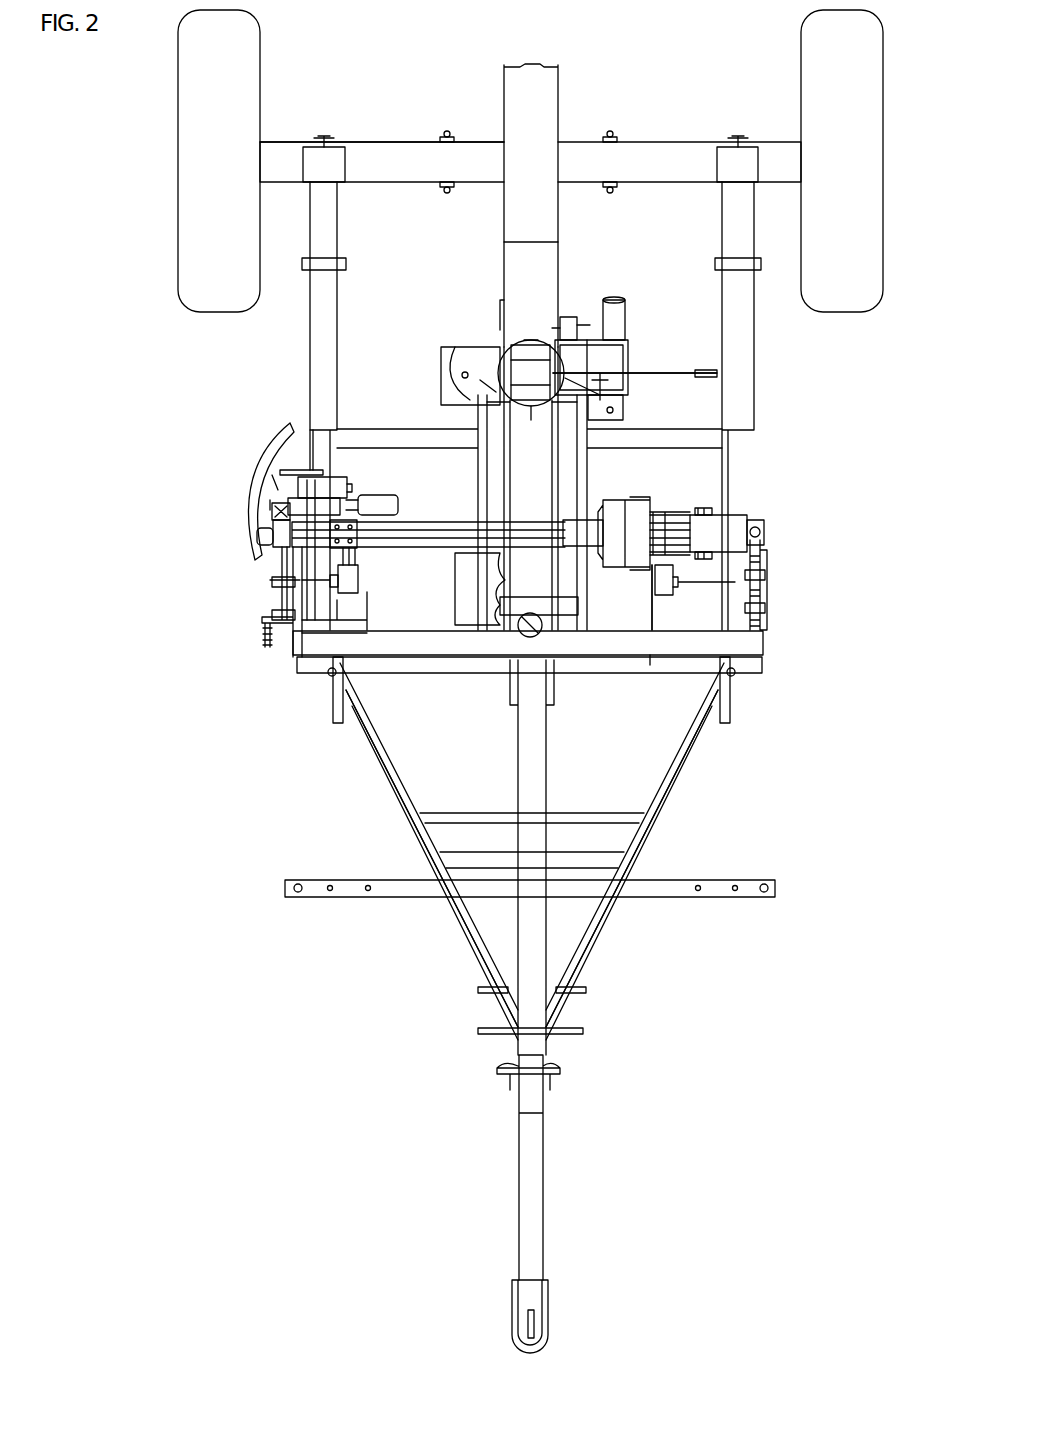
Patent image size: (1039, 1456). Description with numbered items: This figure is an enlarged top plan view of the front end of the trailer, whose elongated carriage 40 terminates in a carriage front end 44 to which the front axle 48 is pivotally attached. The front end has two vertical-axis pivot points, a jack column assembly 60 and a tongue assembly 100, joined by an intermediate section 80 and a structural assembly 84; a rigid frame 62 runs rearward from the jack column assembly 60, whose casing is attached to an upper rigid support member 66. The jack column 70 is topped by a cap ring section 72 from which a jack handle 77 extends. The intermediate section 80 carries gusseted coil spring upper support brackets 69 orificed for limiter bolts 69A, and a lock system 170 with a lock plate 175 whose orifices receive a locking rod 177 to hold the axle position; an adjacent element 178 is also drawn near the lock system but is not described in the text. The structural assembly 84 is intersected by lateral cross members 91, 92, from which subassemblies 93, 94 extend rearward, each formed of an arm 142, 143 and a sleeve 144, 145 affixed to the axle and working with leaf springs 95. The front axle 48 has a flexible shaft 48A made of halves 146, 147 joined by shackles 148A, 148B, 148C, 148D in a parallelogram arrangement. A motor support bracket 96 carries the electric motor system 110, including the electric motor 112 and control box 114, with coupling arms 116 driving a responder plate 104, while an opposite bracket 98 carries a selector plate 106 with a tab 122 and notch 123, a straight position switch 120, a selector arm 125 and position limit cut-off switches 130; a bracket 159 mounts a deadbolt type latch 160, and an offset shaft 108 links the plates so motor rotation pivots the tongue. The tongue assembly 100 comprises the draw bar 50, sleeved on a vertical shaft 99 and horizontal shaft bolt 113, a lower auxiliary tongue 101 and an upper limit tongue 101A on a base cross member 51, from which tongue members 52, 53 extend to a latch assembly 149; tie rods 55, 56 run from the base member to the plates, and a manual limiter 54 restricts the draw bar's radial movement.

The elongated carriage 40 is at (155, 272).
The carriage front end 44 is at (764, 315).
The front axle 48 is at (530, 95).
The flexible shaft 48A is at (645, 140).
The draw bar 50 is at (544, 1006).
The base cross member 51 is at (560, 660).
The tongue member 52 is at (372, 745).
The tongue member 53 is at (712, 700).
The manual limiter 54 is at (350, 930).
The tie rod 55 is at (765, 590).
The tie rod 56 is at (270, 600).
The jack column assembly 60 is at (512, 178).
The rigid frame 62 is at (500, 95).
The upper rigid support member 66 is at (548, 270).
The coil spring upper support bracket 69 is at (535, 345).
The coil spring limiter bolt 69A is at (463, 345).
The jack column 70 is at (500, 300).
The cap ring section 72 is at (492, 390).
The jack handle 77 is at (620, 370).
The intermediate section 80 is at (490, 640).
The structural assembly 84 is at (560, 475).
The lateral cross member 91 is at (766, 532).
The lateral cross member 92 is at (350, 672).
The subassembly 93 is at (760, 215).
The subassembly 94 is at (321, 406).
The leaf spring 95 is at (340, 325).
The motor support bracket 96 is at (665, 565).
The bracket 98 is at (357, 535).
The vertical shaft 99 is at (518, 655).
The tongue assembly 100 is at (563, 850).
The lower auxiliary tongue 101 is at (715, 750).
The upper limit tongue 101A is at (468, 930).
The responder plate 104 is at (735, 512).
The selector plate 106 is at (299, 448).
The offset shaft 108 is at (420, 528).
The electric motor system 110 is at (640, 492).
The electric motor 112 is at (580, 520).
The horizontal shaft bolt 113 is at (535, 612).
The control box 114 is at (460, 612).
The coupling arms 116 is at (672, 510).
The straight position switch 120 is at (350, 468).
The tab 122 is at (260, 445).
The selector plate notch 123 is at (278, 470).
The selector arm 125 is at (310, 470).
The position limit cut-off switch 130 is at (458, 588).
The arm 142 is at (310, 455).
The arm 143 is at (792, 406).
The sleeve 144 is at (330, 232).
The sleeve 145 is at (750, 232).
The axle half 146 is at (378, 150).
The axle half 147 is at (662, 160).
The shackle 148A is at (447, 130).
The shackle 148B is at (444, 193).
The shackle 148C is at (610, 130).
The shackle 148D is at (610, 195).
The latch assembly 149 is at (512, 1060).
The bracket 159 is at (380, 495).
The deadbolt type latch 160 is at (260, 520).
The lock system 170 is at (640, 388).
The lock plate 175 is at (610, 420).
The locking rod 177 is at (568, 317).
The cylinder 178 is at (612, 310).